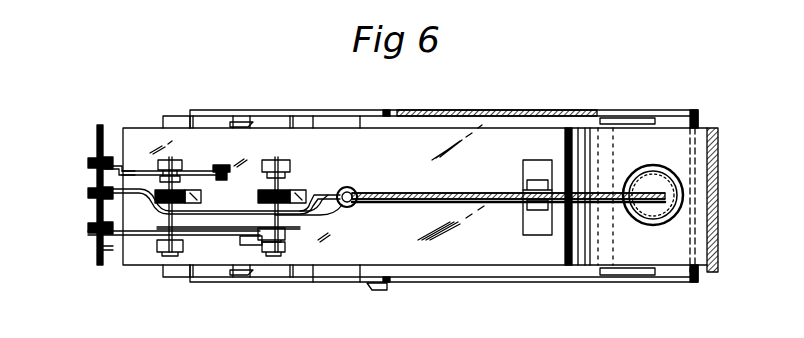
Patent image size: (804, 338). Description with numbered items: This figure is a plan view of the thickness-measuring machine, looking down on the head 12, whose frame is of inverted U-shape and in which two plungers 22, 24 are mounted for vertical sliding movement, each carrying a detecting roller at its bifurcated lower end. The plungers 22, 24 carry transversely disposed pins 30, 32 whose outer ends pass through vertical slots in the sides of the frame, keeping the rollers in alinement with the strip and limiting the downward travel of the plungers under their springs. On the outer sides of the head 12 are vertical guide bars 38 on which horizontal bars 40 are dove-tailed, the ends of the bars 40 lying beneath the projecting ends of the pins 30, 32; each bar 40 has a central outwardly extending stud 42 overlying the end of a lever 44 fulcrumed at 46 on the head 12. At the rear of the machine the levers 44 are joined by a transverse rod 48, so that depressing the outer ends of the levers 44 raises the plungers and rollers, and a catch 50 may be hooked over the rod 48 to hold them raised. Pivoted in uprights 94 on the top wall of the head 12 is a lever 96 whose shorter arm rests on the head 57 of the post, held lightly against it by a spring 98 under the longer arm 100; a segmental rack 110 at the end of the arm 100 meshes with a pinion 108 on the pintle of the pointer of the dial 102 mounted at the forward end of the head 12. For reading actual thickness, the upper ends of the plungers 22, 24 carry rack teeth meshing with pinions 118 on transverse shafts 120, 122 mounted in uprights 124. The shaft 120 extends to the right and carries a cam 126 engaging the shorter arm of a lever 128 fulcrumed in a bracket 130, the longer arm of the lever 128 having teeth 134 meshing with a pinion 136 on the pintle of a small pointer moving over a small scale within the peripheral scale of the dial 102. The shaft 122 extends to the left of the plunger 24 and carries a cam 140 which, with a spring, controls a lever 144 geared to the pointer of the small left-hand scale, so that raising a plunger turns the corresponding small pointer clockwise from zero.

The head 12 is at (490, 267).
The plunger 22 is at (335, 185).
The plunger 24 is at (205, 196).
The pin 30 is at (293, 118).
The pin 32 is at (193, 114).
The vertical guide bar 38 is at (250, 122).
The horizontal bar 40 is at (270, 118).
The stud 42 is at (236, 116).
The lever 44 is at (493, 112).
The fulcrum 46 is at (380, 290).
The transverse rod 48 is at (693, 112).
The catch 50 is at (636, 121).
The head of the post 57 is at (665, 185).
The upright 94 is at (527, 212).
The lever 96 is at (556, 185).
The spring 98 is at (354, 190).
The longer arm 100 is at (468, 194).
The dial 102 is at (97, 151).
The pinion 108 is at (105, 195).
The segmental rack 110 is at (105, 191).
The pinion 118 is at (188, 193).
The shaft 120 is at (340, 210).
The shaft 122 is at (175, 228).
The upright 124 is at (186, 151).
The cam 126 is at (286, 235).
The lever 128 is at (255, 244).
The bracket 130 is at (240, 236).
The teeth 134 is at (112, 248).
The pinion 136 is at (100, 235).
The cam 140 is at (155, 171).
The lever 144 is at (135, 171).